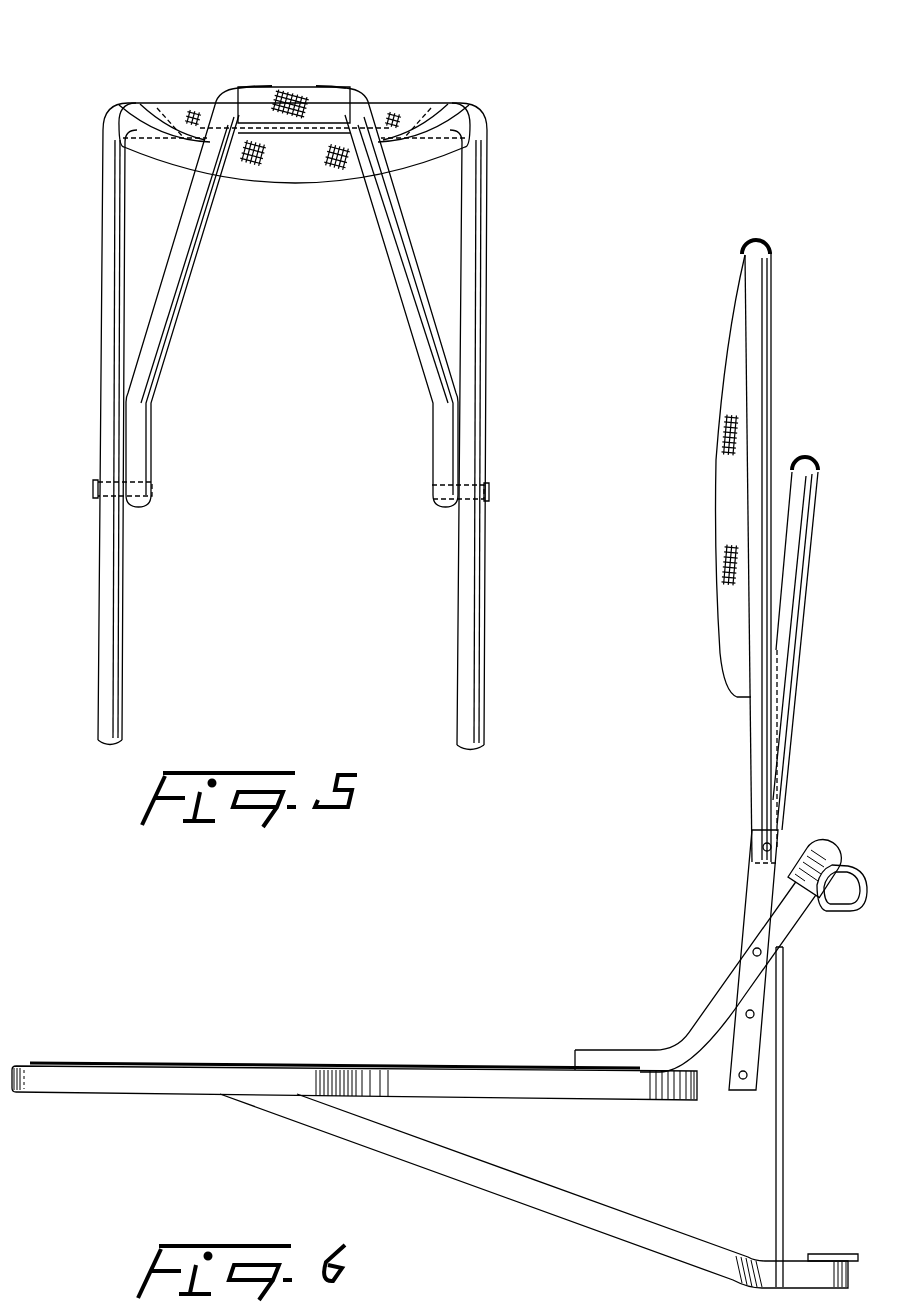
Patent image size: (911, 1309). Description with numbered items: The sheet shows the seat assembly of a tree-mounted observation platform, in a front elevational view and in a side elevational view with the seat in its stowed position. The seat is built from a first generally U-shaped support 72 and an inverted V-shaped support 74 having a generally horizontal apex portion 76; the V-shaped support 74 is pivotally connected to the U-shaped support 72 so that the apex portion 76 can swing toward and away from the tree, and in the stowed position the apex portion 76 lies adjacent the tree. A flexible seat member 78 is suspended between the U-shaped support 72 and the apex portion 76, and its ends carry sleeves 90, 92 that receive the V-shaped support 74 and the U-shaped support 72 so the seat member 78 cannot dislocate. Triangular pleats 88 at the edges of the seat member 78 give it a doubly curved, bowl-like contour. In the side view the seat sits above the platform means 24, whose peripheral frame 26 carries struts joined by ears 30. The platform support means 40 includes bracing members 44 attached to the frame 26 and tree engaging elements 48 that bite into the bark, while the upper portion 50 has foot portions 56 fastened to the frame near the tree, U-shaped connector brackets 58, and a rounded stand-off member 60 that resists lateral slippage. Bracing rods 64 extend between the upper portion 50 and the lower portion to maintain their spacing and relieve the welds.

In FIG. 6, the platform means 24 is at (170, 1092).
In FIG. 6, the peripheral frame 26 is at (380, 1068).
In FIG. 6, the ear 30 is at (450, 1064).
In FIG. 6, the platform support means 40 is at (562, 1220).
In FIG. 6, the bracing member 44 is at (387, 1142).
In FIG. 6, the tree engaging element 48 is at (830, 1254).
In FIG. 6, the upper portion 50 is at (708, 1000).
In FIG. 6, the foot portion 56 is at (628, 1062).
In FIG. 6, the U-shaped connector bracket 58 is at (824, 847).
In FIG. 6, the U-shaped stand-off member 60 is at (838, 911).
In FIG. 6, the bracing rod 64 is at (783, 1173).
In FIG. 5, the U-shaped support 72 is at (102, 610).
In FIG. 6, the U-shaped support 72 is at (807, 588).
In FIG. 5, the V-shaped support 74 is at (412, 292).
In FIG. 6, the V-shaped support 74 is at (768, 342).
In FIG. 5, the apex portion 76 is at (327, 93).
In FIG. 5, the seat member 78 is at (287, 180).
In FIG. 6, the seat member 78 is at (710, 510).
In FIG. 5, the pleat 88 is at (150, 147).
In FIG. 5, the sleeve 90 is at (342, 87).
In FIG. 6, the sleeve 90 is at (753, 237).
In FIG. 5, the sleeve 92 is at (410, 107).
In FIG. 6, the sleeve 92 is at (815, 458).